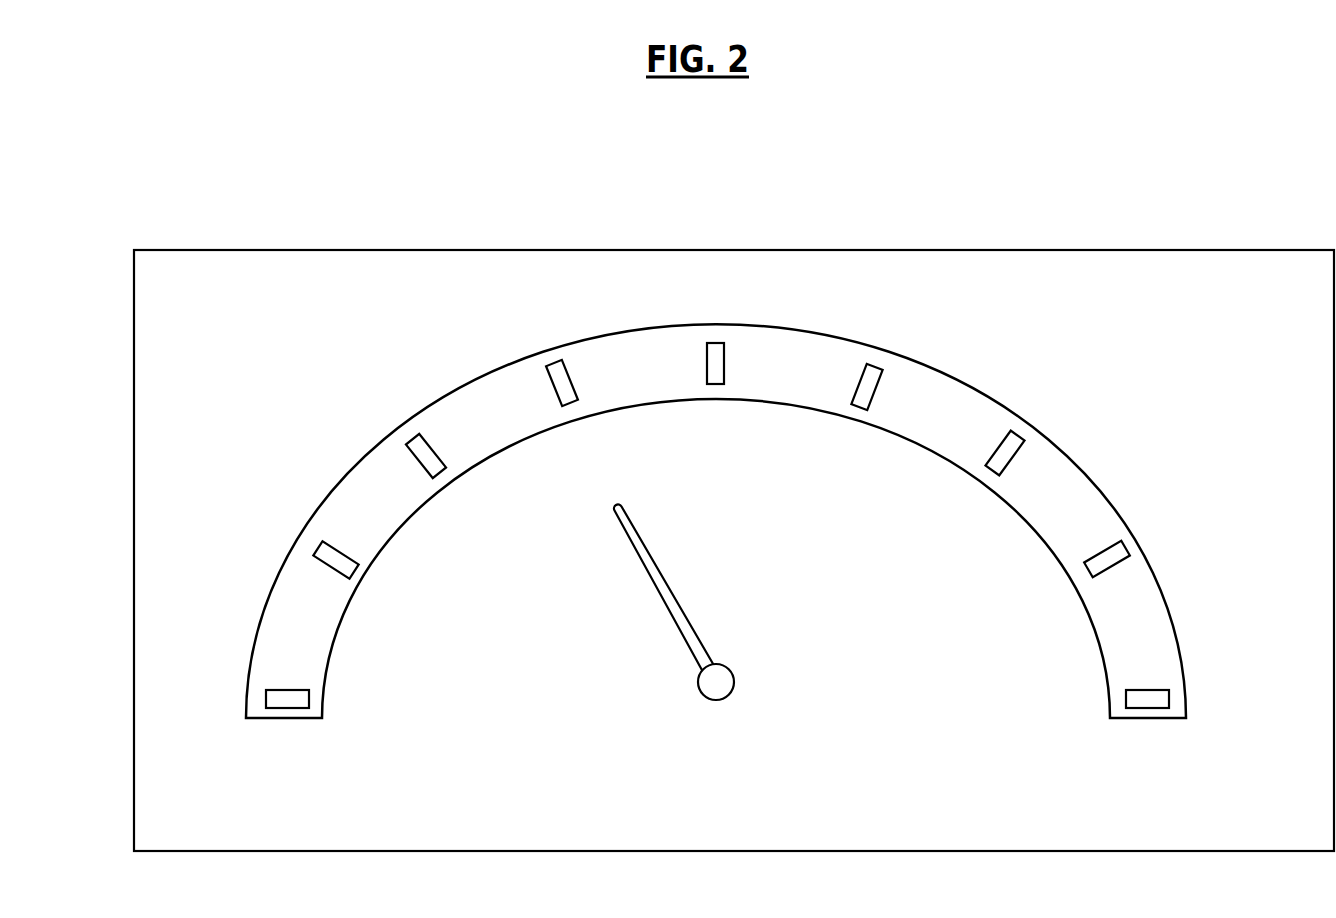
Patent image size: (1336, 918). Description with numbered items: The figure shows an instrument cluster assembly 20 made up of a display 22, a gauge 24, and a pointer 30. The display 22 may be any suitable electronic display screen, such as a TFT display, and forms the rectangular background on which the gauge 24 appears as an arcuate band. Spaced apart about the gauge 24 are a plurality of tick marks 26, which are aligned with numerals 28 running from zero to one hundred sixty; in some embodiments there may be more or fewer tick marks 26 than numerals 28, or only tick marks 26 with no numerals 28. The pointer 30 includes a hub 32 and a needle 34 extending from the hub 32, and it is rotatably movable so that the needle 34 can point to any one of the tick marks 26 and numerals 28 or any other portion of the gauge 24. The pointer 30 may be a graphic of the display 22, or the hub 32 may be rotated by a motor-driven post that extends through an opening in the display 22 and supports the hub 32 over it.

The instrument cluster assembly 20 is at (284, 203).
The display 22 is at (1036, 250).
The gauge 24 is at (997, 400).
The tick marks 26 is at (878, 365).
The numerals 28 is at (952, 529).
The pointer 30 is at (716, 635).
The hub 32 is at (716, 700).
The needle 34 is at (670, 623).